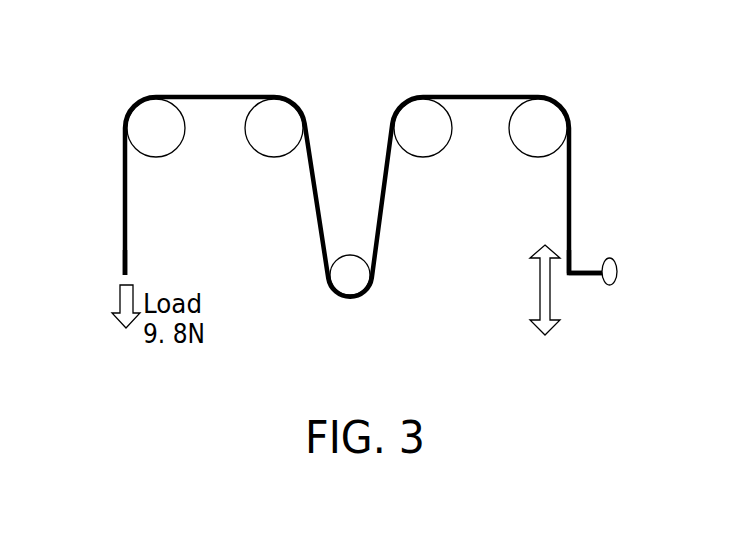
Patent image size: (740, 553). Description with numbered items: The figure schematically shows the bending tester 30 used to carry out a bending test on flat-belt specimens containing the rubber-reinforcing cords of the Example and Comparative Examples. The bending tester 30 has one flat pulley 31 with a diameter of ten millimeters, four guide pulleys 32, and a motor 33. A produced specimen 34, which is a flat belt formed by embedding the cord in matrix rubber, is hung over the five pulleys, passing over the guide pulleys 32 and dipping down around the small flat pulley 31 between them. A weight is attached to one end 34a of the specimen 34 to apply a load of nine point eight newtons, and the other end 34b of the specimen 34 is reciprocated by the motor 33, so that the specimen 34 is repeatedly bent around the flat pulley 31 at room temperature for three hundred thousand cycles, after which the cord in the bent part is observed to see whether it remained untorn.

The bending tester 30 is at (93, 83).
The flat pulley 31 is at (355, 280).
The guide pulleys 32 is at (155, 150).
The motor 33 is at (608, 285).
The specimen 34 is at (225, 97).
The one end of the specimen 34a is at (130, 268).
The other end of the specimen 34b is at (588, 270).